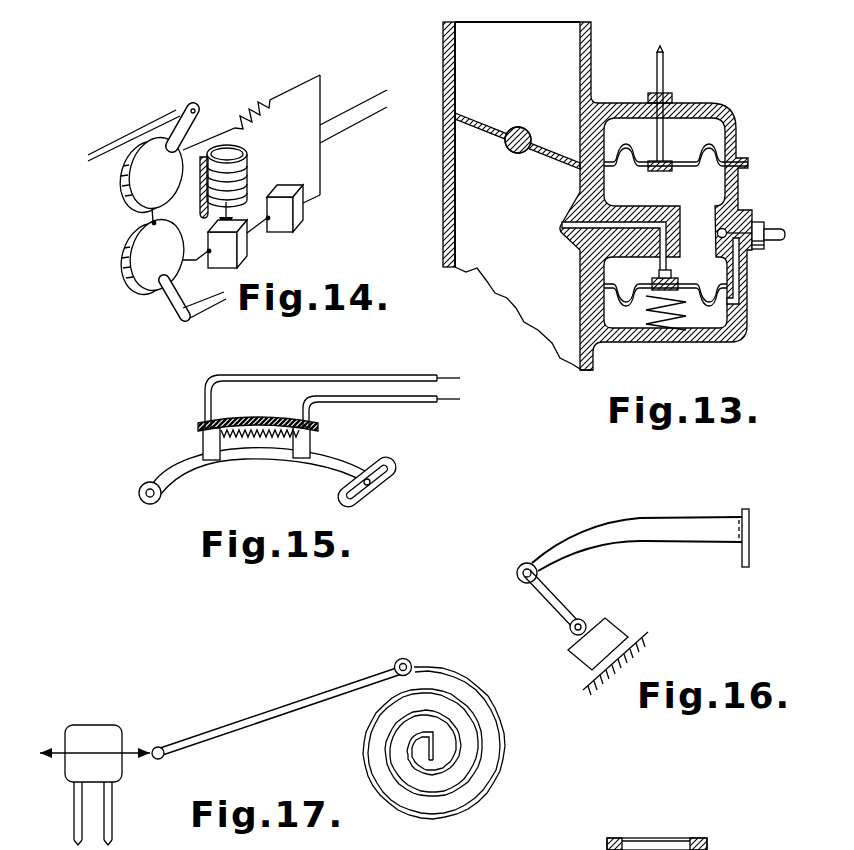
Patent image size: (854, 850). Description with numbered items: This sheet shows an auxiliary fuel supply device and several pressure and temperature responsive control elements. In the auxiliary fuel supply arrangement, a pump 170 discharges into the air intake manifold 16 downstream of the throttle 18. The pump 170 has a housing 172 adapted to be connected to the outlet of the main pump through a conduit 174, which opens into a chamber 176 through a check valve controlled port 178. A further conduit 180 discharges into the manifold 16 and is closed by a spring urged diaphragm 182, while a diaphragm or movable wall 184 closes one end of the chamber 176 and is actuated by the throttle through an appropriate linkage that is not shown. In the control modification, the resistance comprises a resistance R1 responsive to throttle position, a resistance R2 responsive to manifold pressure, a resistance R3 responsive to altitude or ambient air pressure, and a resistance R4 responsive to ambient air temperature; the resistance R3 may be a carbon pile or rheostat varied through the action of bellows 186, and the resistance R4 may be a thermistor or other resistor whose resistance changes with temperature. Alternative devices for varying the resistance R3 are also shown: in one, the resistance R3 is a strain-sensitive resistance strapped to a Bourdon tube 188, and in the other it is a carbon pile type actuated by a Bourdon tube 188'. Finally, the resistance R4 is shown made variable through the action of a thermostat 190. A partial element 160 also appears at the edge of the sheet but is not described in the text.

In FIG. 13, the air intake manifold 16 is at (562, 65).
In FIG. 13, the throttle 18 is at (478, 118).
In FIG. 13, the pump 170 is at (712, 93).
In FIG. 13, the housing 172 is at (737, 342).
In FIG. 13, the conduit 174 is at (776, 215).
In FIG. 13, the chamber 176 is at (712, 266).
In FIG. 13, the check valve controlled port 178 is at (706, 224).
In FIG. 13, the conduit 180 is at (562, 236).
In FIG. 13, the spring urged diaphragm 182 is at (630, 302).
In FIG. 13, the diaphragm or movable wall 184 is at (706, 160).
In FIG. 14, the bellows 186 is at (232, 162).
In FIG. 15, the Bourdon tube 188 is at (260, 454).
In FIG. 16, the Bourdon tube 188' is at (633, 522).
In FIG. 17, the thermostat 190 is at (446, 668).
In FIG. 16, the flange 160 is at (728, 849).
In FIG. 14, the resistance responsive to throttle position R1 is at (141, 164).
In FIG. 14, the resistance responsive to manifold pressure R2 is at (170, 263).
In FIG. 14, the resistance responsive to altitude or ambient air pressure R3 is at (214, 244).
In FIG. 15, the resistance responsive to altitude or ambient air pressure R3 is at (235, 410).
In FIG. 16, the resistance responsive to altitude or ambient air pressure R3 is at (586, 632).
In FIG. 14, the resistance responsive to ambient air temperature R4 is at (283, 209).
In FIG. 17, the resistance responsive to ambient air temperature R4 is at (95, 785).